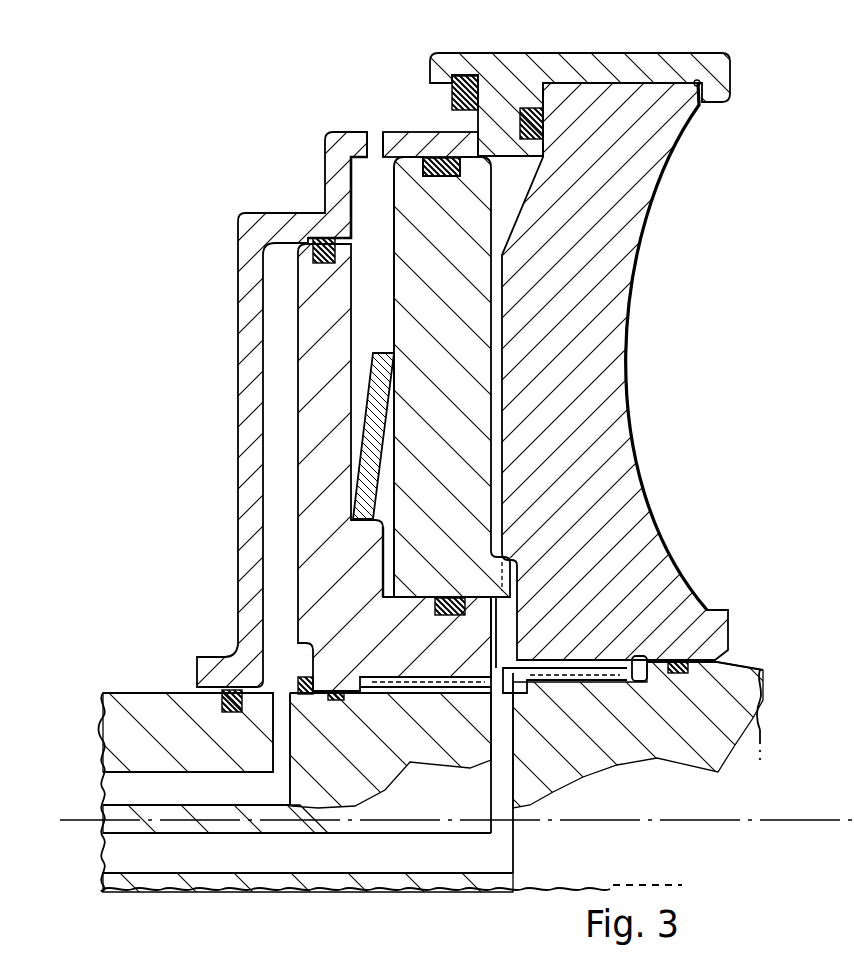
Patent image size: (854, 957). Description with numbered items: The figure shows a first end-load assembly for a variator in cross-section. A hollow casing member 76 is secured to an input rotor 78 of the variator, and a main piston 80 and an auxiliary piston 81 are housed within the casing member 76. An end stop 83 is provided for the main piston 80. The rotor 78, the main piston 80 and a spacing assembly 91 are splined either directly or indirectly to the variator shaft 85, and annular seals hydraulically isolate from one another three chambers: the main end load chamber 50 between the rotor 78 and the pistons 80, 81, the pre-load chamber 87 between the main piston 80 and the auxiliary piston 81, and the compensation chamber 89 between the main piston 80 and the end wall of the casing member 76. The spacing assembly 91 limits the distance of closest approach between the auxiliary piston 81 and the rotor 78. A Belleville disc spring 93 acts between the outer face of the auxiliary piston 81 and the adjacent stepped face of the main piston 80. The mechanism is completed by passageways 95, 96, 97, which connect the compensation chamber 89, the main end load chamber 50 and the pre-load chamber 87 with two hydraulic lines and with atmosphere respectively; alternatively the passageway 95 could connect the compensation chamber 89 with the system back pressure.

The main end load chamber 50 is at (512, 178).
The hollow casing member 76 is at (530, 68).
The input rotor 78 is at (597, 405).
The main piston 80 is at (300, 370).
The auxiliary piston 81 is at (394, 213).
The end stop 83 is at (298, 688).
The variator shaft 85 is at (733, 692).
The pre-load chamber 87 is at (363, 275).
The compensation chamber 89 is at (277, 312).
The spacing assembly 91 is at (523, 578).
The Belleville disc spring 93 is at (363, 405).
The passageway 95 is at (112, 788).
The passageway 96 is at (112, 858).
The passageway 97 is at (373, 130).